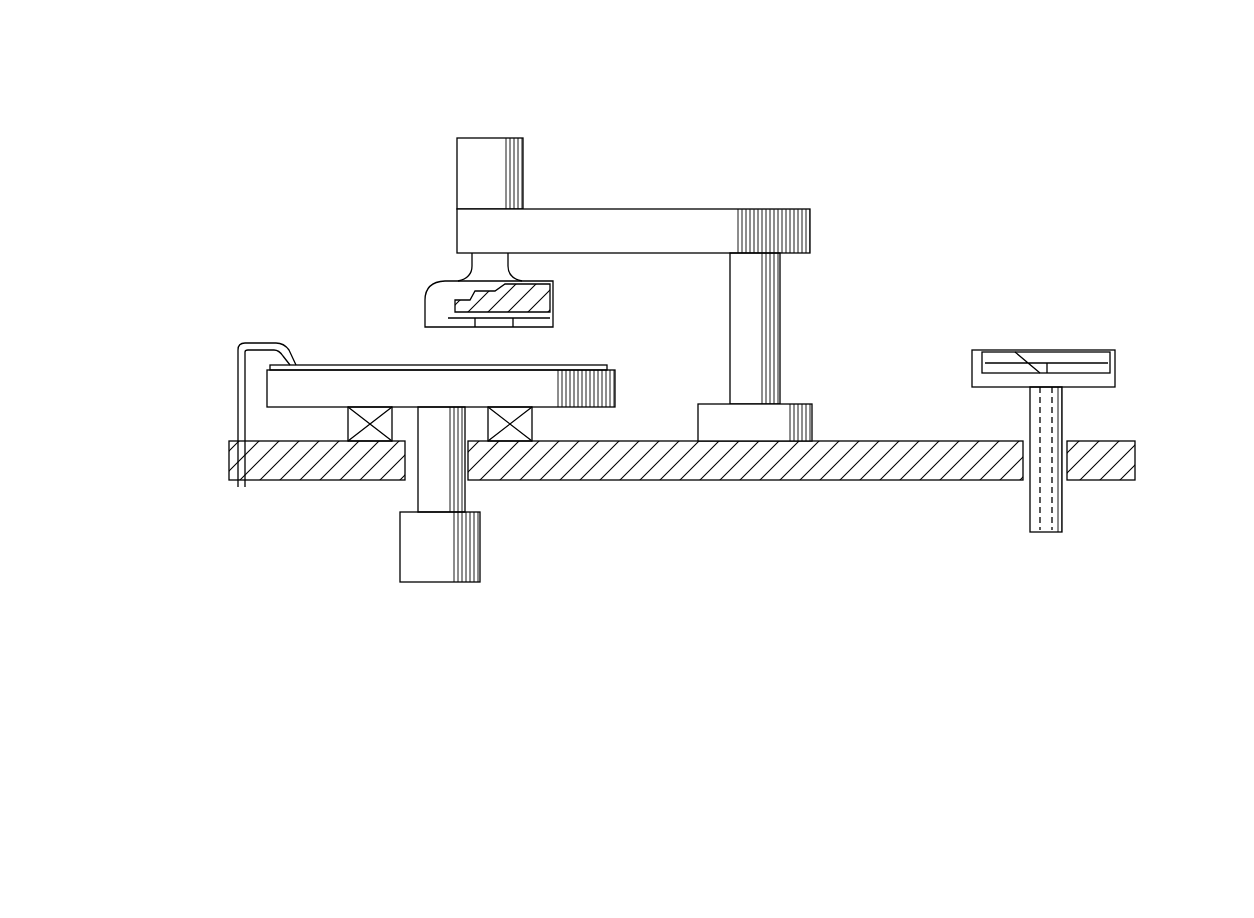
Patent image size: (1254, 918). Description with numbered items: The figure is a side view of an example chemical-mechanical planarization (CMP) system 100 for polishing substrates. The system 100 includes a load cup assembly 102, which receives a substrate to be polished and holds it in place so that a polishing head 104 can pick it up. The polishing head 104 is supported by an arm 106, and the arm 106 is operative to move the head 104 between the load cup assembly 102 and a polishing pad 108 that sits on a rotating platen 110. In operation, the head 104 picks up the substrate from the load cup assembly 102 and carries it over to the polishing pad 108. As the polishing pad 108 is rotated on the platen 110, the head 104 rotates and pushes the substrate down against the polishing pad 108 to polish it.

The chemical-mechanical planarization (CMP) system 100 is at (248, 106).
The load cup assembly 102 is at (1117, 360).
The polishing head 104 is at (425, 305).
The arm 106 is at (808, 236).
The polishing pad 108 is at (593, 366).
The rotating platen 110 is at (615, 393).